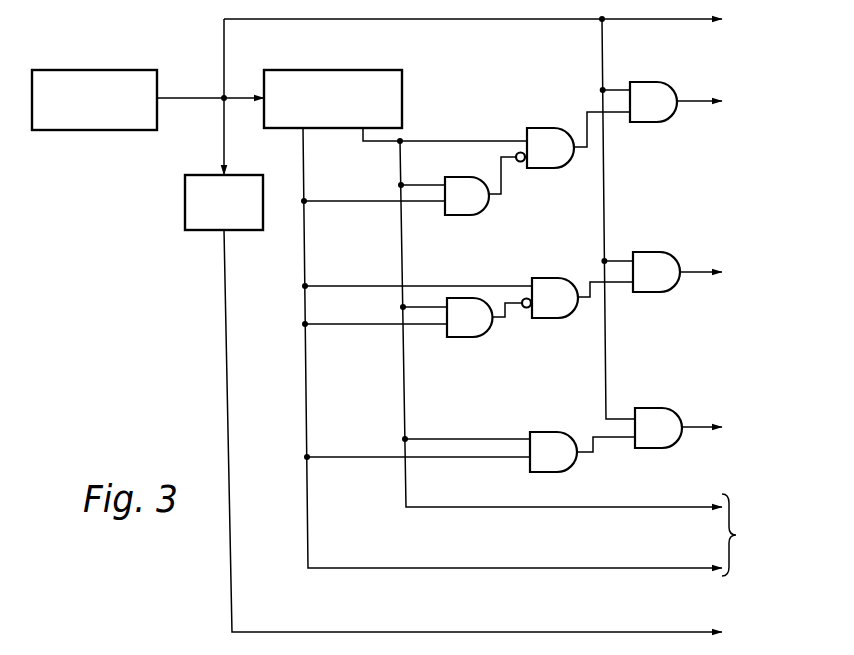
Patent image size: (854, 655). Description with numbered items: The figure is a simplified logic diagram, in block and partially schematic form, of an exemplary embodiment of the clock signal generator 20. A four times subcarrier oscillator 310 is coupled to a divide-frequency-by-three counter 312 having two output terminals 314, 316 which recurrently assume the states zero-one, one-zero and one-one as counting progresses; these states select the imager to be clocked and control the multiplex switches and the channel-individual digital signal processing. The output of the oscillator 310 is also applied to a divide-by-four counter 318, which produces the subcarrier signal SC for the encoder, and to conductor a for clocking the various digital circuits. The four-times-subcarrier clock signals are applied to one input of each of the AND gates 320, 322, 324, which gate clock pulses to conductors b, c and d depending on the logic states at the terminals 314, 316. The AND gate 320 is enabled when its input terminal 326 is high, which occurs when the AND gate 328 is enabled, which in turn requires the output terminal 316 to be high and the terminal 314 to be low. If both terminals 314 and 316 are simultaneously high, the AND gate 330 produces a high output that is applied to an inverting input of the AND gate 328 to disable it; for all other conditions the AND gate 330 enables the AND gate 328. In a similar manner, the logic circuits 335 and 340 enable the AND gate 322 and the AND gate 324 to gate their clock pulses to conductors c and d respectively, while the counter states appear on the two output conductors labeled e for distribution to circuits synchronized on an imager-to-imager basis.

The clock signal generator 20 is at (189, 335).
The four times subcarrier oscillator 310 is at (110, 130).
The divide-frequency-by-three counter 312 is at (402, 107).
The output terminal 314 is at (302, 146).
The output terminal 316 is at (363, 134).
The divide-by-four counter 318 is at (233, 230).
The AND gate 320 is at (633, 83).
The AND gate 322 is at (637, 252).
The AND gate 324 is at (638, 408).
The input terminal 326 is at (600, 96).
The AND gate 328 is at (560, 128).
The AND gate 330 is at (465, 215).
The logic circuit 335 is at (557, 247).
The logic circuit 340 is at (545, 392).